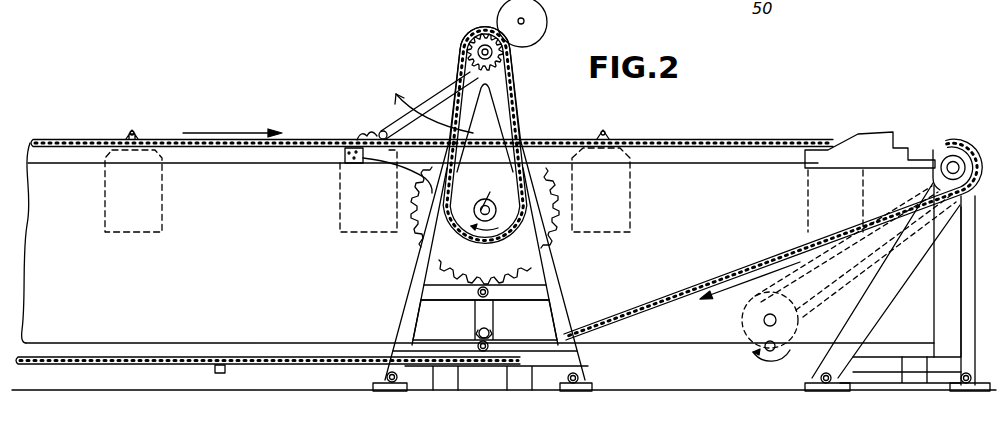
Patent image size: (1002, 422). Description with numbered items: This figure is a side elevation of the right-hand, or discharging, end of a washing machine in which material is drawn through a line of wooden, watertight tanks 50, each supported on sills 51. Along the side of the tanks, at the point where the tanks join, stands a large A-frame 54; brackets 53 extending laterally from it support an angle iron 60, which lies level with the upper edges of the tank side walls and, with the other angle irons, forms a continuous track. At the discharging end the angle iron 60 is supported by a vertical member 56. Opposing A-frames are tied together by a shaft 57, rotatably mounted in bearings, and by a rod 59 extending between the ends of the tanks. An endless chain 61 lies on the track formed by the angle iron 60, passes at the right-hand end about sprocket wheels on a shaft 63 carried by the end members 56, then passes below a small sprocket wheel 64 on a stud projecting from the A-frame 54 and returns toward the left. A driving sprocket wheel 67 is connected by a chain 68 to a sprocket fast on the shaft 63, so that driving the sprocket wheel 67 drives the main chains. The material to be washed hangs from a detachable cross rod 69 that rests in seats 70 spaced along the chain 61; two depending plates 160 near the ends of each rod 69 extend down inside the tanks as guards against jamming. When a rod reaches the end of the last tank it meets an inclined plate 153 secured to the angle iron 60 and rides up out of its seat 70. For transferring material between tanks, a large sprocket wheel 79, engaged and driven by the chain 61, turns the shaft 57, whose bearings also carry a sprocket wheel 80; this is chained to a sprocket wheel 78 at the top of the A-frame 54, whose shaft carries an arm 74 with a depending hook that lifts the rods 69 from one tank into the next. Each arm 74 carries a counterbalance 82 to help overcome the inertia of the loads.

The tank 50 is at (649, 333).
The sill 51 is at (522, 377).
The bracket 53 is at (385, 162).
The A-frame 54 is at (548, 262).
The vertical member 56 is at (967, 328).
The shaft 57 is at (494, 184).
The rod 59 is at (478, 293).
The angle iron 60 is at (205, 163).
The chain 61 is at (675, 143).
The shaft 63 is at (955, 163).
The small sprocket wheel 64 is at (492, 330).
The sprocket wheel 67 is at (788, 303).
The chain 68 is at (958, 217).
The cross rod 69 is at (138, 133).
The seat 70 is at (600, 131).
The arm 74 is at (432, 96).
The sprocket wheel 78 is at (500, 52).
The large sprocket wheel 79 is at (543, 190).
The sprocket wheel 80 is at (510, 207).
The counterbalance 82 is at (533, 20).
The inclined plate 153 is at (873, 145).
The depending plate 160 is at (163, 197).